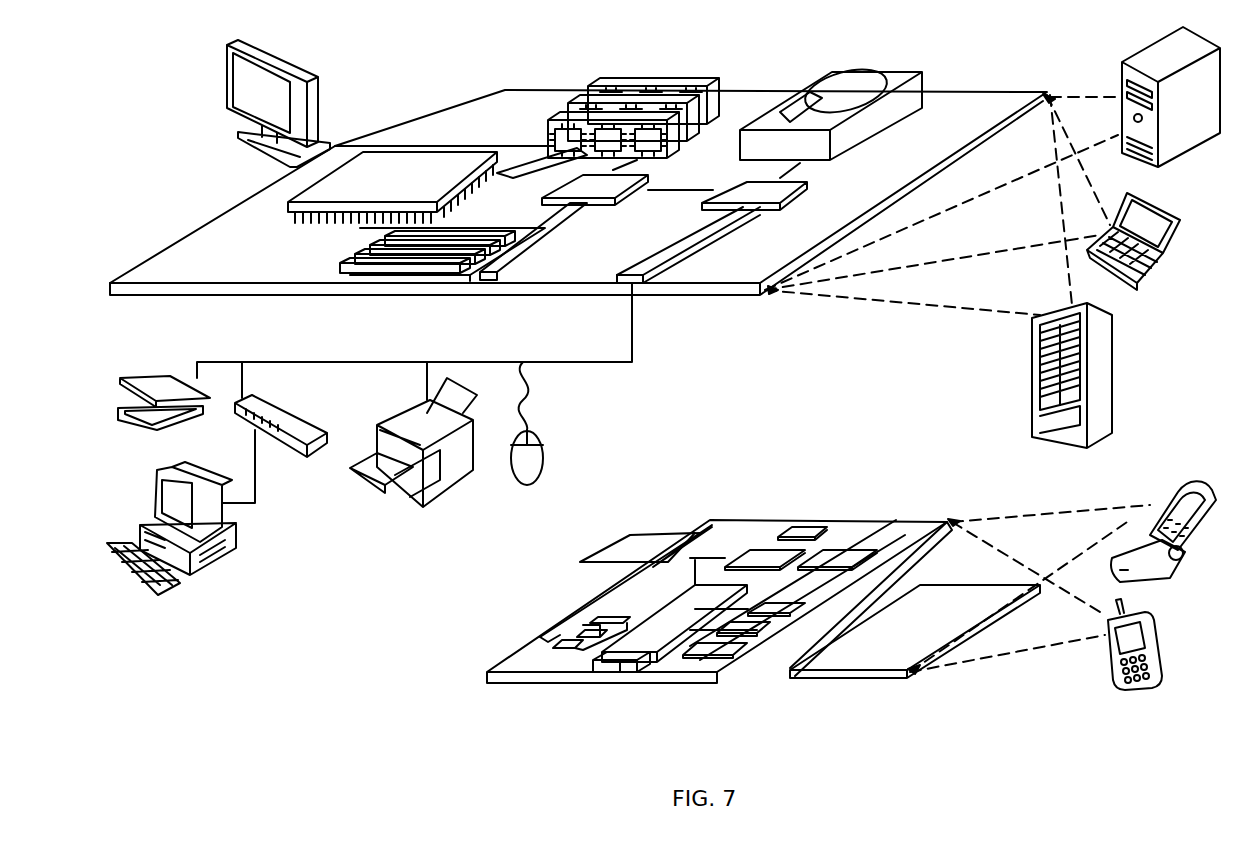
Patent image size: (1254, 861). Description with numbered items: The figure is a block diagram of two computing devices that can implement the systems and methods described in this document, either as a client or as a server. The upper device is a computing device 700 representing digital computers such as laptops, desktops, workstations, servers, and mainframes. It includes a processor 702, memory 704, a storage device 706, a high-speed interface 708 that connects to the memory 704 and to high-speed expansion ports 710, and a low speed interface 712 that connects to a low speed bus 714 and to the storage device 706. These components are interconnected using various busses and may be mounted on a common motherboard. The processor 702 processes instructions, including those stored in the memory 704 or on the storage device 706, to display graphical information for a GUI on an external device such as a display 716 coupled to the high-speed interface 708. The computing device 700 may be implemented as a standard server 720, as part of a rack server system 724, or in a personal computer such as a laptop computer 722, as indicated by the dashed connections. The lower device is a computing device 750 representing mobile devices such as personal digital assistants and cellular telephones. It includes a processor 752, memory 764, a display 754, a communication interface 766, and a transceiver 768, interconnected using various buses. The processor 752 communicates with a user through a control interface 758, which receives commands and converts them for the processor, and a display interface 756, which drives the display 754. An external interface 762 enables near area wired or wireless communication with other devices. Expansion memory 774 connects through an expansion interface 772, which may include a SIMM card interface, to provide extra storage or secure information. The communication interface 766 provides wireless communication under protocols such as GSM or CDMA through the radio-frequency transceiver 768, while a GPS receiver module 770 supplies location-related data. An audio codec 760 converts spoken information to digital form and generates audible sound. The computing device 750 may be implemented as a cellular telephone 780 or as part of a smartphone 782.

The computing device 700 is at (411, 63).
The processor 702 is at (288, 200).
The memory 704 is at (610, 83).
The storage device 706 is at (828, 75).
The high-speed interface 708 is at (573, 187).
The high-speed expansion ports 710 is at (360, 258).
The low speed interface 712 is at (738, 187).
The low speed bus 714 is at (640, 285).
The display 716 is at (228, 45).
The standard server 720 is at (1120, 76).
The laptop computer 722 is at (1185, 212).
The rack server system 724 is at (1033, 398).
The computing device 750 is at (463, 688).
The processor 752 is at (650, 642).
The display 754 is at (873, 660).
The display interface 756 is at (717, 652).
The control interface 758 is at (737, 628).
The audio codec 760 is at (770, 608).
The external interface 762 is at (620, 675).
The memory 764 is at (573, 635).
The communication interface 766 is at (762, 557).
The transceiver 768 is at (838, 555).
The GPS receiver module 770 is at (810, 522).
The expansion interface 772 is at (697, 533).
The expansion memory 774 is at (630, 534).
The cellular telephone 780 is at (1152, 490).
The smartphone 782 is at (1105, 652).